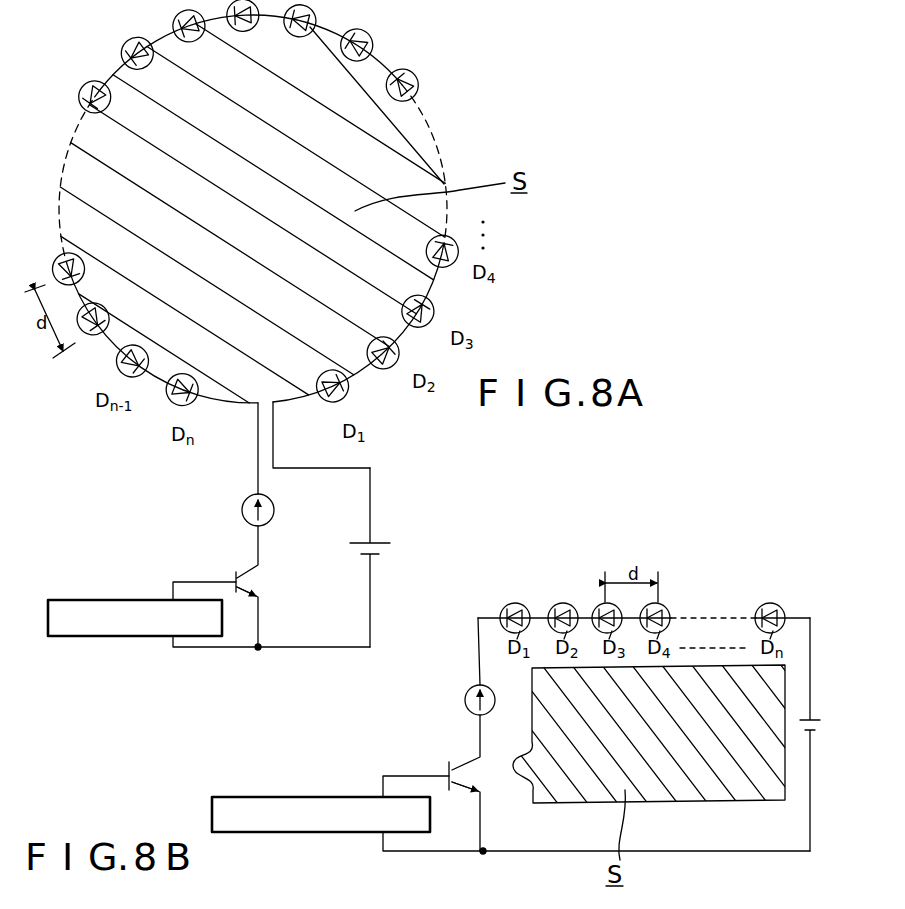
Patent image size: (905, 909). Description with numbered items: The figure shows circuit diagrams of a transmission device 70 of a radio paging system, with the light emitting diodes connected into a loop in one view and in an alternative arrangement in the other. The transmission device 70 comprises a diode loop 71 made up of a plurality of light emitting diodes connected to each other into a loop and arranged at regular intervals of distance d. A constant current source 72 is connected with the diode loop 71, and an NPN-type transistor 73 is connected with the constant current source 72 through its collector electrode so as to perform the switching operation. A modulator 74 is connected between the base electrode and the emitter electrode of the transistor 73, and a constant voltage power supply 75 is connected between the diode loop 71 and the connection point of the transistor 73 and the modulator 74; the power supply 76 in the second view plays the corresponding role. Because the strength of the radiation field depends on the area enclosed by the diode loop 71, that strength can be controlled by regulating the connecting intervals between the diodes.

In FIG. 8A, the transmission device 70 is at (483, 97).
In FIG. 8B, the transmission device 70 is at (718, 546).
In FIG. 8A, the diode loop 71 is at (358, 376).
In FIG. 8B, the diode loop 71 is at (565, 600).
In FIG. 8A, the constant current source 72 is at (242, 508).
In FIG. 8B, the constant current source 72 is at (465, 700).
In FIG. 8A, the NPN-type transistor 73 is at (250, 566).
In FIG. 8B, the NPN-type transistor 73 is at (468, 760).
In FIG. 8A, the modulator 74 is at (127, 600).
In FIG. 8B, the modulator 74 is at (360, 797).
In FIG. 8A, the constant voltage power supply 75 is at (390, 549).
In FIG. 8B, the power source 76 is at (818, 727).